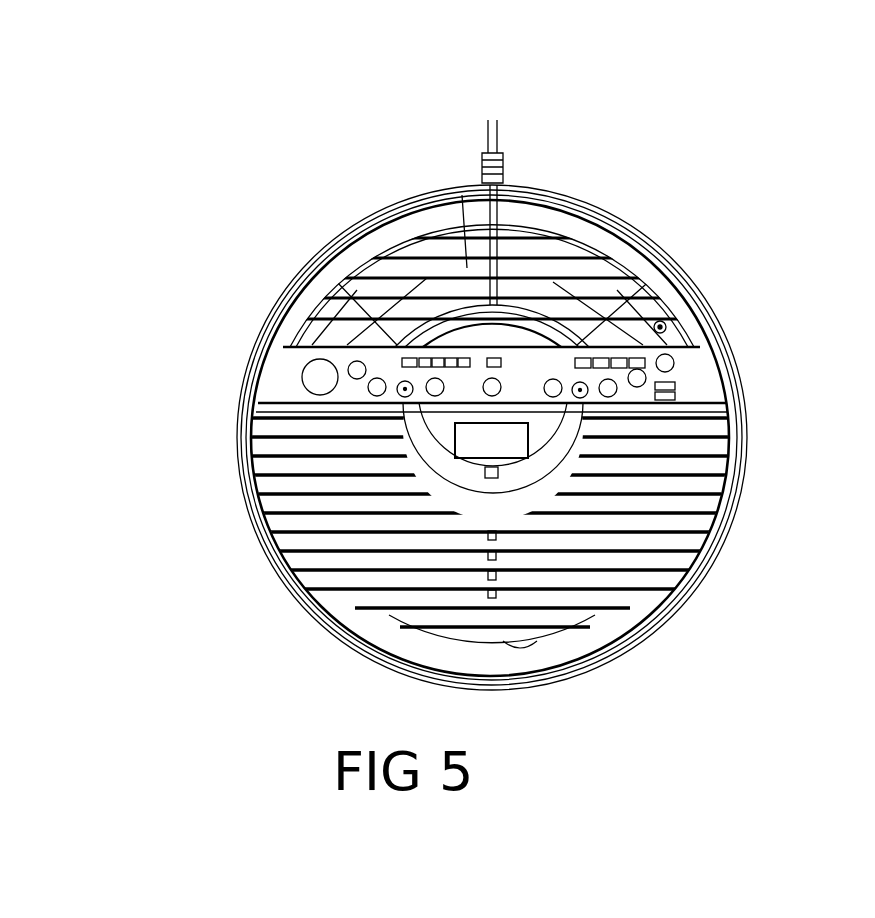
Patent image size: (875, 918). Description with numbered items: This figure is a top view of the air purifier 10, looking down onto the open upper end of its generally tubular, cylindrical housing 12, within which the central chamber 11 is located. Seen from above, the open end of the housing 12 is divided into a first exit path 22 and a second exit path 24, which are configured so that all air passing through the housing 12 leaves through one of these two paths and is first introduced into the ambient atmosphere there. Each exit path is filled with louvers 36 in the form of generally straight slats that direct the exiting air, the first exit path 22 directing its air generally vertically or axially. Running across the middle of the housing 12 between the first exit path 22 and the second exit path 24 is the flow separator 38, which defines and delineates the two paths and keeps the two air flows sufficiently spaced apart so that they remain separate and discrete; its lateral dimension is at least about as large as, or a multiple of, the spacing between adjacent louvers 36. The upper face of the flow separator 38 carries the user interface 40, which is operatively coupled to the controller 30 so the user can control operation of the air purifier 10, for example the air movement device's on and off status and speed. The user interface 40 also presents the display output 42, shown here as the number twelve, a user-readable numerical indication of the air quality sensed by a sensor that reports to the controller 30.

The air purifier 10 is at (790, 272).
The central chamber 11 is at (515, 231).
The housing 12 is at (745, 438).
The first air flow exit path 22 is at (571, 249).
The second air flow exit path 24 is at (673, 538).
The controller 30 is at (312, 377).
The louvers 36 is at (612, 272).
The flow separator 38 is at (467, 387).
The user interface 40 is at (545, 368).
The display output 42 is at (457, 443).